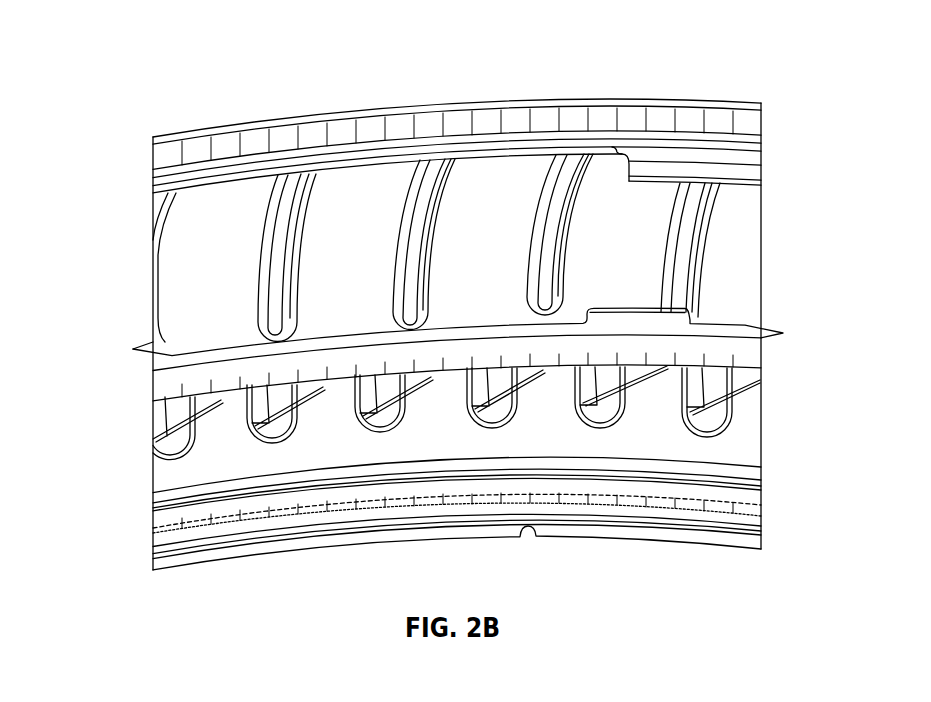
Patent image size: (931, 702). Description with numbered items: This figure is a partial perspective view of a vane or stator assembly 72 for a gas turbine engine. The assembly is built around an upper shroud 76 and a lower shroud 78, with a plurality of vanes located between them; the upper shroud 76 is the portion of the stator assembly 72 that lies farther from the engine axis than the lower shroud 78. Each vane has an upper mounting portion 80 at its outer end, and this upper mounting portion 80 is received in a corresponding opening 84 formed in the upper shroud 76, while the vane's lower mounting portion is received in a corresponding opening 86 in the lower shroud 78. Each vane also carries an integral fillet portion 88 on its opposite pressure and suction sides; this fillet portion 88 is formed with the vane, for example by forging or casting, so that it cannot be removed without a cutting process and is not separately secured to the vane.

The vane or stator assembly 72 is at (178, 44).
The upper shroud 76 is at (221, 146).
The lower shroud 78 is at (172, 472).
The upper mounting portion 80 is at (297, 182).
The opening 84 is at (262, 266).
The opening 86 is at (153, 449).
The integral fillet portion 88 is at (373, 404).